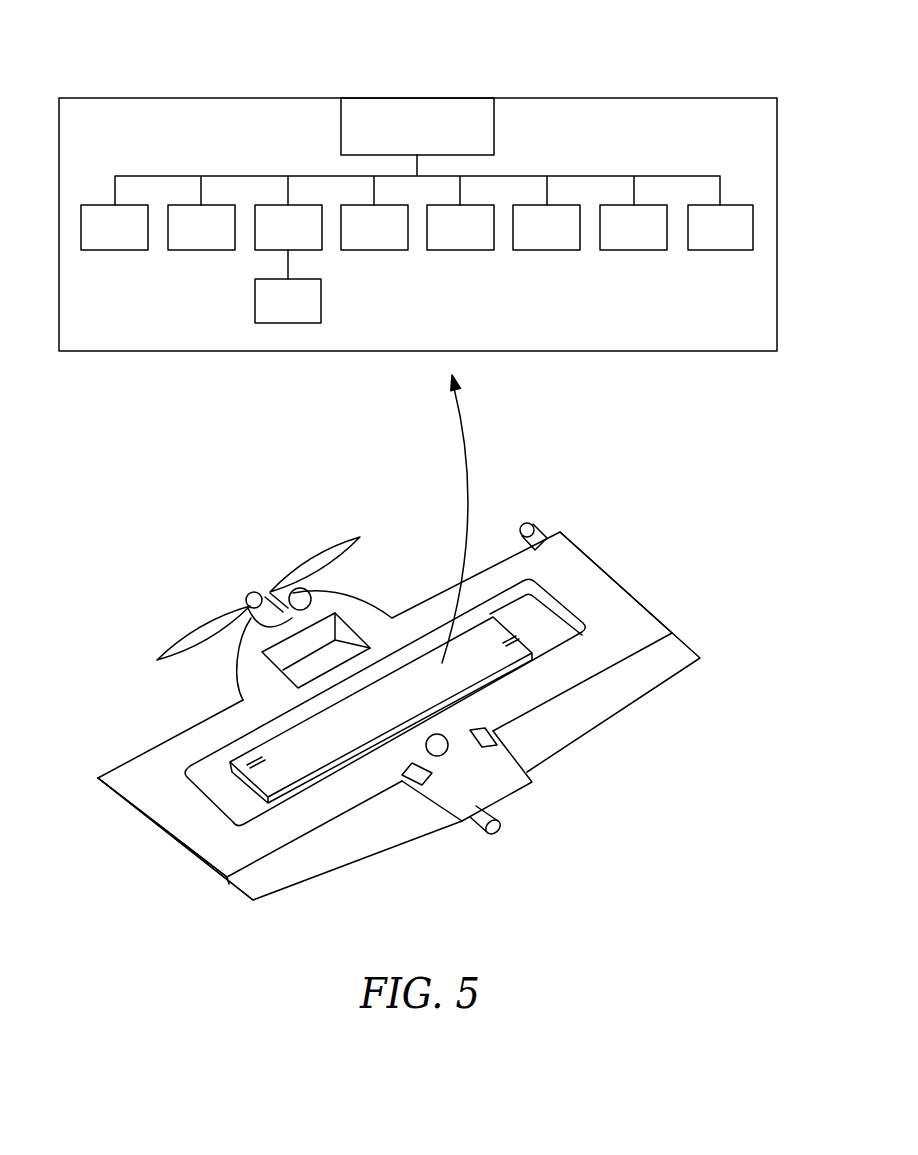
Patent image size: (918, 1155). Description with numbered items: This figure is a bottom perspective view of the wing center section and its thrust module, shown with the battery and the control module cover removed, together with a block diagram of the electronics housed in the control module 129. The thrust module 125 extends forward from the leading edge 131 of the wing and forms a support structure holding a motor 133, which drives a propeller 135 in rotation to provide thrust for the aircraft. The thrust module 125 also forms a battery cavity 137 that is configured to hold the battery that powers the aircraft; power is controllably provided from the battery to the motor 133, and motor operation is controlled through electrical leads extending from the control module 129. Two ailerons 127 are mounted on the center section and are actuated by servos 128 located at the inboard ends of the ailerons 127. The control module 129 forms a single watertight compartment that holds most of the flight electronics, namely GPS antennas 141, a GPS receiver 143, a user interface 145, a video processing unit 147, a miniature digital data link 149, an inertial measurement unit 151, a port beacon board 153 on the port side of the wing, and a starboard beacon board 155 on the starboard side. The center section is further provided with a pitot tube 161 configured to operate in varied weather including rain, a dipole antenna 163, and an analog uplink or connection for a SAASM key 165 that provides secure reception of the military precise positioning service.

The thrust module 125 is at (252, 663).
The ailerons 127 is at (665, 653).
The servos 128 is at (487, 733).
The control module 129 is at (777, 98).
The leading edge 131 is at (113, 772).
The motor 133 is at (270, 613).
The propeller 135 is at (341, 550).
The battery cavity 137 is at (300, 677).
The GPS antennas 141 is at (255, 306).
The GPS receiver 143 is at (270, 205).
The user interface 145 is at (494, 126).
The video processing unit 147 is at (373, 250).
The miniature digital data link 149 is at (459, 250).
The inertial measurement unit 151 is at (200, 250).
The port beacon board 153 is at (719, 250).
The starboard beacon board 155 is at (113, 250).
The pitot tube 161 is at (546, 533).
The dipole antenna 163 is at (546, 250).
The SAASM key connection 165 is at (633, 250).